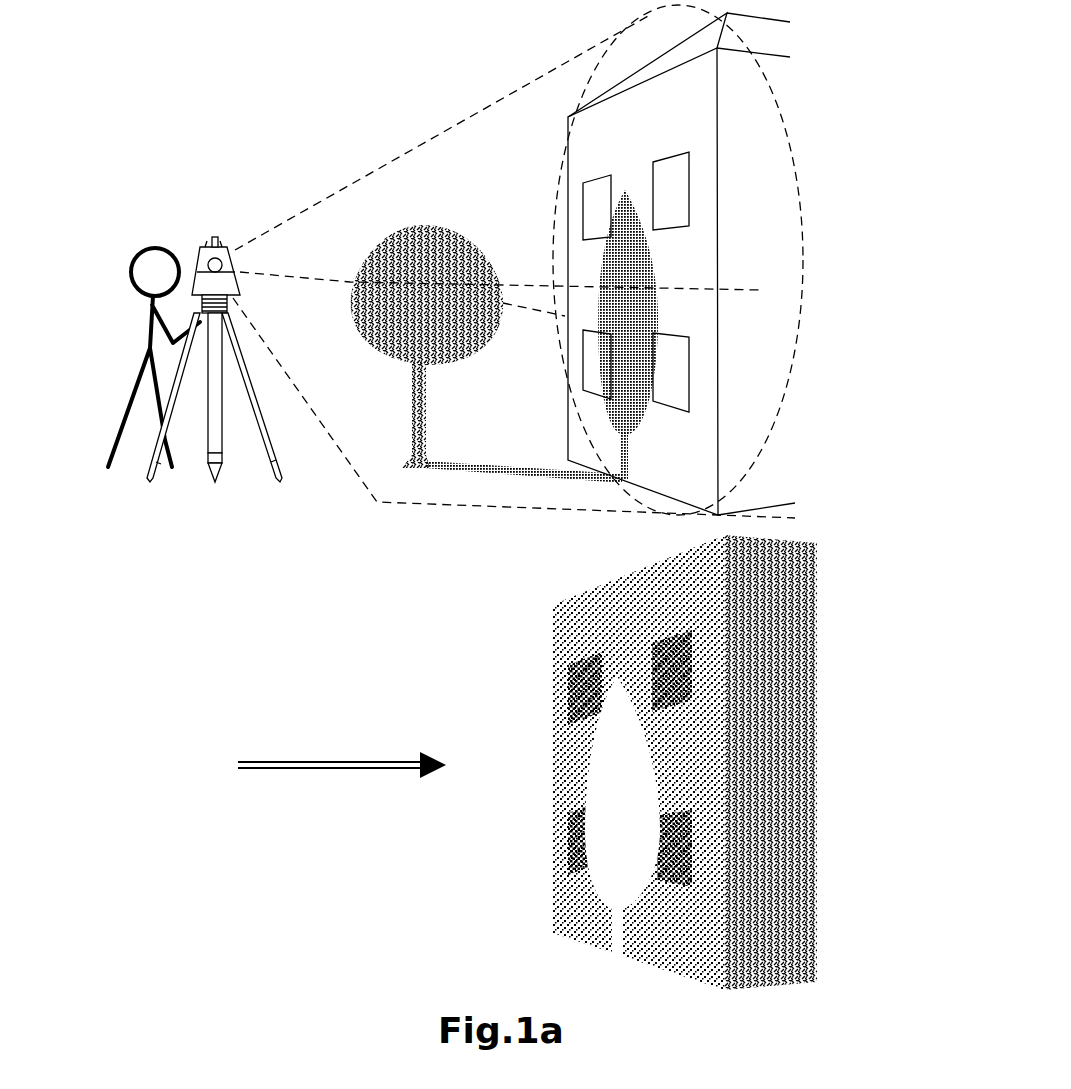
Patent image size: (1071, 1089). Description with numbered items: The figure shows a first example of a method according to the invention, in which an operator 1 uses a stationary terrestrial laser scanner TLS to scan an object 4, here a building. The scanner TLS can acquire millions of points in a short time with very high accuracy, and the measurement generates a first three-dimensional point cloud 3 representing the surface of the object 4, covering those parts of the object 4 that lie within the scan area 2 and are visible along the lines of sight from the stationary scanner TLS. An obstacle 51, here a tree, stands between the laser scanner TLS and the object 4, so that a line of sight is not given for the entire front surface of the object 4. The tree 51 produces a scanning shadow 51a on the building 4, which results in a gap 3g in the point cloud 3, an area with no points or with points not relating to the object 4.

The user / operator 1 is at (147, 265).
The terrestrial laser scanner TLS is at (223, 247).
The scan area 2 is at (416, 180).
The obstacle 51 is at (355, 330).
The scanning shadow 51a is at (603, 270).
The object 4 is at (632, 146).
The first 3D point cloud 3 is at (639, 762).
The gap 3g is at (598, 777).